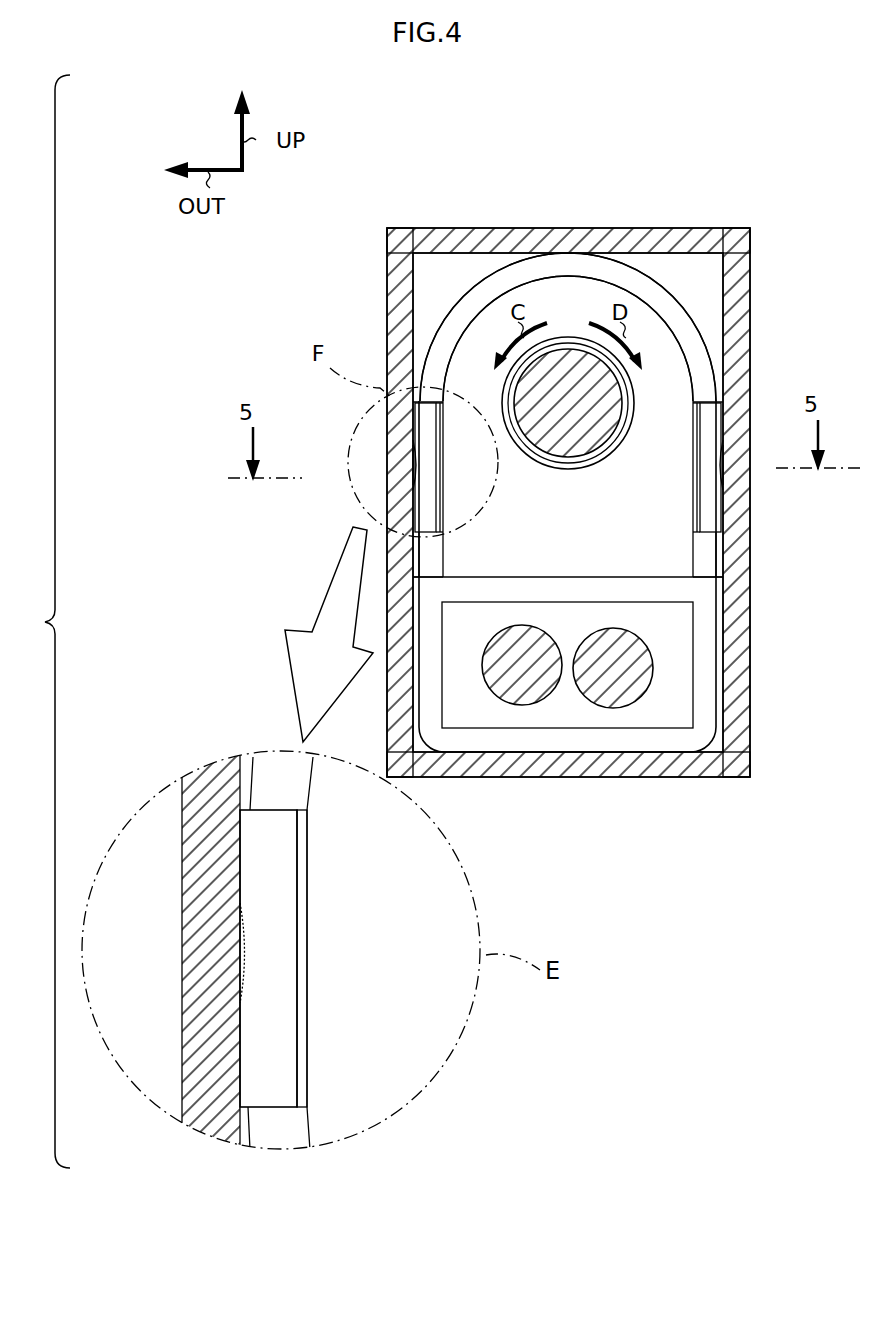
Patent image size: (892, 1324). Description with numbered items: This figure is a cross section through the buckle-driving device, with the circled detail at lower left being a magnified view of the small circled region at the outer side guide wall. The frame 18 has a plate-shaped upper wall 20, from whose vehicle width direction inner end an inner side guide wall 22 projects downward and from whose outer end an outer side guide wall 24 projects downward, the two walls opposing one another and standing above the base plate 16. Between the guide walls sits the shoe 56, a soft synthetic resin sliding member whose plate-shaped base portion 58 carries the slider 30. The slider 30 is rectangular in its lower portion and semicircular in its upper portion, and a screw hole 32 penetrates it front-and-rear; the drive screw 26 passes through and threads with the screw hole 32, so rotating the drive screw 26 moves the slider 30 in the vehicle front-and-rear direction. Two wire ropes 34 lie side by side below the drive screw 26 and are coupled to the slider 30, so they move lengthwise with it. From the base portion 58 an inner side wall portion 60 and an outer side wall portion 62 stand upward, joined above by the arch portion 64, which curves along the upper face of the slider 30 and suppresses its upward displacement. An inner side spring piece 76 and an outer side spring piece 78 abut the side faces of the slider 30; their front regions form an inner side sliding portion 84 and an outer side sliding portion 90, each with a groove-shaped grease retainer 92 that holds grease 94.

The frame 18 is at (680, 202).
The upper wall 20 is at (448, 236).
The inner side guide wall 22 is at (750, 279).
The outer side guide wall 24 is at (387, 307).
The base portion 58 is at (597, 768).
The arch portion 64 is at (646, 290).
The slider 30 is at (568, 300).
The shoe 56 is at (680, 268).
The base plate 16 is at (528, 742).
The outer side wall portion 62 is at (440, 568).
The inner side wall portion 60 is at (692, 568).
The outer side spring piece 78 is at (440, 512).
The outer side sliding portion 90 is at (437, 440).
The inner side spring piece 76 is at (693, 512).
The inner side sliding portion 84 is at (701, 440).
The grease 94 is at (396, 452).
The grease retainer 92 is at (406, 462).
The screw hole 32 is at (598, 430).
The drive screw 26 is at (578, 437).
The wire ropes 34 is at (492, 687).